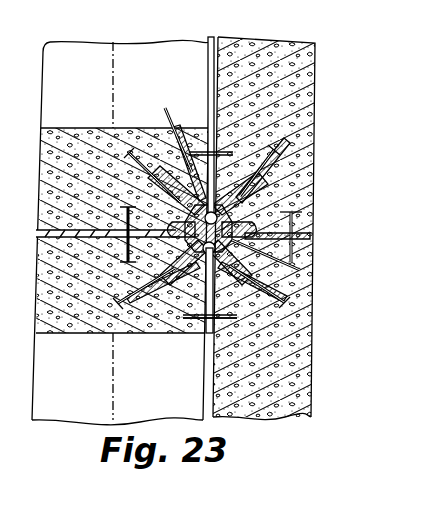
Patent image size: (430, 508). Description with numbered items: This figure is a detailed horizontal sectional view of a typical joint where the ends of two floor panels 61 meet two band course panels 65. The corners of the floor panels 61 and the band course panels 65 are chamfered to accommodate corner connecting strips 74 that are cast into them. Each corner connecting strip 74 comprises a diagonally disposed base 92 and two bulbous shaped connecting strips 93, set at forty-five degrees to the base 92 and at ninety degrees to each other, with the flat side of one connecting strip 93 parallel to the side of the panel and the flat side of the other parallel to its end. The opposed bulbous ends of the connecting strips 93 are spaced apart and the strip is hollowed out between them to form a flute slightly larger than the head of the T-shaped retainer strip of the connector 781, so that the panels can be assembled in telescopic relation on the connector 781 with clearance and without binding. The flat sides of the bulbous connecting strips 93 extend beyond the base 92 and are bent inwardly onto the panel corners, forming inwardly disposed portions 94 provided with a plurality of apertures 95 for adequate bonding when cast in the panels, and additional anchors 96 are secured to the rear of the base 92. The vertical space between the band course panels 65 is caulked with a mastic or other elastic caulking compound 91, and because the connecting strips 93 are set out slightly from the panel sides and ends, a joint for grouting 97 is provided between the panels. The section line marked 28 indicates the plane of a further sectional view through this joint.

The floor panel 61 is at (68, 55).
The band course panel 65 is at (312, 60).
The corner connecting strip 74 is at (172, 160).
The caulking compound 91 is at (306, 240).
The base 92 is at (262, 182).
The bulbous shaped connecting strip 93 is at (183, 160).
The inwardly disposed portion 94 is at (245, 150).
The aperture 95 is at (212, 128).
The anchor 96 is at (126, 160).
The grouting joint 97 is at (46, 250).
The connector 781 is at (150, 345).
The section line 28 is at (21, 256).